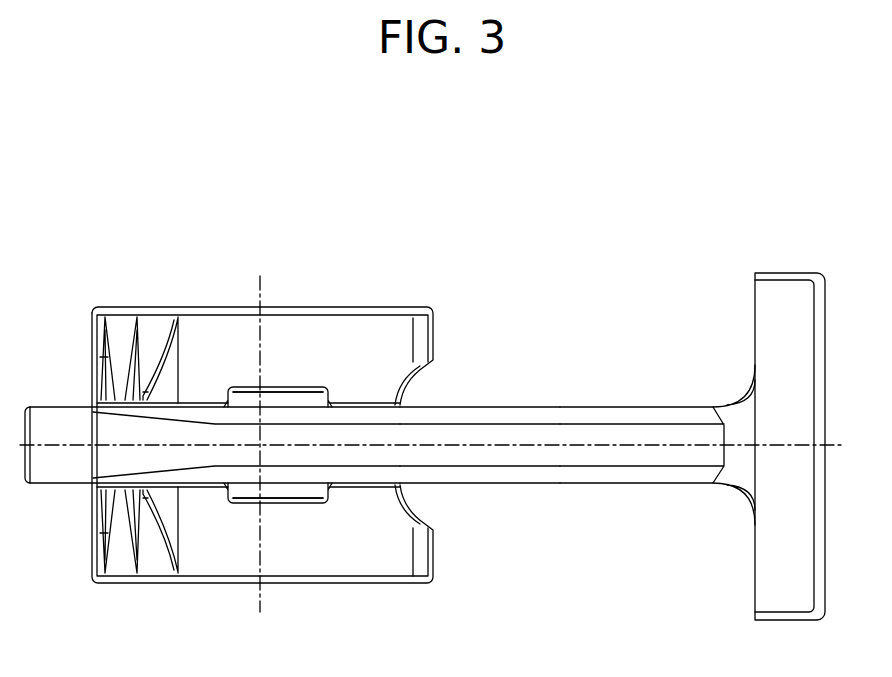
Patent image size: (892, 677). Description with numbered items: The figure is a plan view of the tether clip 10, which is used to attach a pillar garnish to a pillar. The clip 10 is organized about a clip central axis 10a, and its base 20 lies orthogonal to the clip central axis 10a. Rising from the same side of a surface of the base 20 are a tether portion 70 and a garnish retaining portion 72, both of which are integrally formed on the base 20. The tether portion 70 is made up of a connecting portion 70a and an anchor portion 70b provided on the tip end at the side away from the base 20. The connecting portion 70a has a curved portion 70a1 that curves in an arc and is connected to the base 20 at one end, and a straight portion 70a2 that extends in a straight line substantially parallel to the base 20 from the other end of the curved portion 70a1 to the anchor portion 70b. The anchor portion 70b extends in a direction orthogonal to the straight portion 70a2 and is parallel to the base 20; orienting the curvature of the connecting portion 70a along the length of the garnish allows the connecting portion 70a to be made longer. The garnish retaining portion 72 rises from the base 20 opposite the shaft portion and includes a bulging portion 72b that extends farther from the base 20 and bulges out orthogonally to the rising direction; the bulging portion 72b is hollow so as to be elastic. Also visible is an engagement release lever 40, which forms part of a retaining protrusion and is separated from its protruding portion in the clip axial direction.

The clip 10 is at (440, 303).
The clip central axis 10a is at (258, 447).
The base 20 is at (373, 340).
The engagement release lever 40 is at (63, 462).
The garnish retaining portion 72 is at (290, 387).
The bulging portion 72b is at (305, 385).
The tether portion 70 is at (735, 289).
The connecting portion 70a is at (473, 329).
The curved portion 70a1 is at (355, 437).
The straight portion 70a2 is at (567, 430).
The anchor portion 70b is at (770, 351).